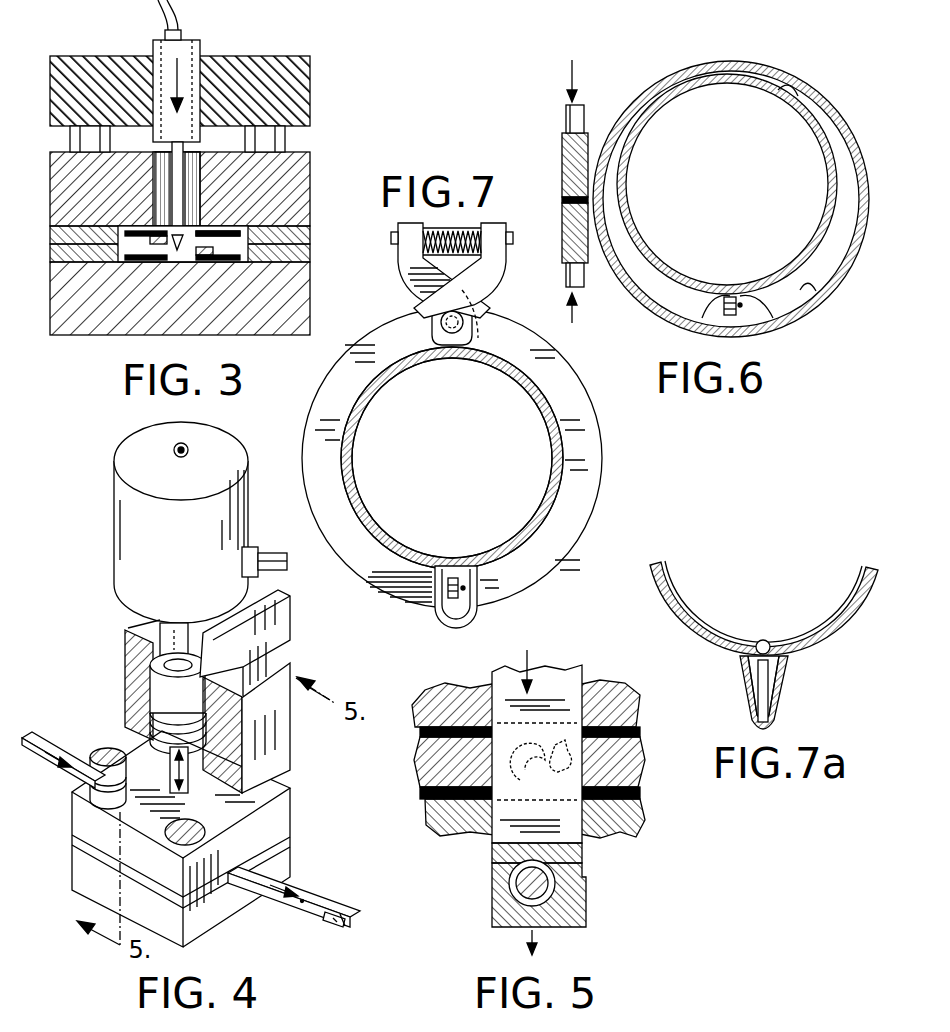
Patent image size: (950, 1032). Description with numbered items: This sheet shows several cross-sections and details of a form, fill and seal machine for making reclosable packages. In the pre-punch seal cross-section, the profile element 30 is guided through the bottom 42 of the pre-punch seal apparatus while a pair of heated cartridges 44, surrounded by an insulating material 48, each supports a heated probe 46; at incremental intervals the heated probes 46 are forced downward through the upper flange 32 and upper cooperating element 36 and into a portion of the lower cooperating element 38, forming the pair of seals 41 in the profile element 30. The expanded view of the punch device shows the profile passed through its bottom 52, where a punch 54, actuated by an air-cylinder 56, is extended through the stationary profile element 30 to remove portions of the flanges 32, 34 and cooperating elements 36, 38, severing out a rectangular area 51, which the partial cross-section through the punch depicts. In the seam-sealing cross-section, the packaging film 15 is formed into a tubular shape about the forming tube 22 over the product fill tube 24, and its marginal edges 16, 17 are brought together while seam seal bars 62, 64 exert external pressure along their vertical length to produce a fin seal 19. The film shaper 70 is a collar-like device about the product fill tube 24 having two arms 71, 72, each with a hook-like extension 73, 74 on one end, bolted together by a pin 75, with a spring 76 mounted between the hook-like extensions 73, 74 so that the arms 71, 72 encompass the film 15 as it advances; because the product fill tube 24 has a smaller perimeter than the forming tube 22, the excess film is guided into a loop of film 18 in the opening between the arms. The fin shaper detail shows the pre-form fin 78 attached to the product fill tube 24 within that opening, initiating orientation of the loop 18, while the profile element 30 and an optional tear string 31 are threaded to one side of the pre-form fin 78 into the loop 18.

In FIG. 6, the packaging film 15 is at (838, 122).
In FIG. 7, the packaging film 15 is at (530, 555).
In FIG. 7a, the packaging film 15 is at (712, 658).
In FIG. 6, the marginal edge 16 is at (560, 208).
In FIG. 6, the marginal edge 17 is at (562, 195).
In FIG. 7, the loop of film 18 is at (472, 630).
In FIG. 7a, the loop of film 18 is at (783, 706).
In FIG. 6, the fin seal 19 is at (562, 200).
In FIG. 6, the forming tube 22 is at (812, 300).
In FIG. 6, the product fill tube 24 is at (785, 93).
In FIG. 7, the product fill tube 24 is at (372, 530).
In FIG. 7a, the product fill tube 24 is at (698, 630).
In FIG. 6, the profile element 30 is at (700, 320).
In FIG. 7, the profile element 30 is at (436, 612).
In FIG. 4, the profile element 30 is at (48, 780).
In FIG. 7a, the profile element 30 is at (745, 676).
In FIG. 6, the tear string 31 is at (770, 322).
In FIG. 7, the tear string 31 is at (478, 600).
In FIG. 7a, the tear string 31 is at (775, 678).
In FIG. 3, the upper flange 32 is at (262, 237).
In FIG. 5, the upper flange 32 is at (437, 733).
In FIG. 3, the flange 34 is at (232, 264).
In FIG. 5, the flange 34 is at (437, 798).
In FIG. 3, the upper cooperating element 36 is at (193, 230).
In FIG. 5, the upper cooperating element 36 is at (585, 852).
In FIG. 3, the lower cooperating element 38 is at (140, 226).
In FIG. 5, the lower cooperating element 38 is at (573, 927).
In FIG. 4, the seals 41 is at (312, 914).
In FIG. 3, the bottom 42 is at (66, 302).
In FIG. 3, the heated cartridge 44 is at (200, 48).
In FIG. 3, the heated probe 46 is at (175, 172).
In FIG. 3, the insulating material 48 is at (75, 65).
In FIG. 4, the rectangular area 51 is at (318, 900).
In FIG. 4, the bottom 52 is at (72, 890).
In FIG. 4, the punch 54 is at (148, 752).
In FIG. 5, the punch 54 is at (563, 677).
In FIG. 4, the air-cylinder 56 is at (106, 492).
In FIG. 6, the seam seal bar 62 is at (583, 112).
In FIG. 6, the seam seal bar 64 is at (588, 268).
In FIG. 7, the film shaper 70 is at (481, 440).
In FIG. 7, the arm 71 is at (548, 500).
In FIG. 7, the arm 72 is at (330, 415).
In FIG. 7, the hook-like extension 73 is at (500, 255).
In FIG. 7, the hook-like extension 74 is at (404, 256).
In FIG. 7, the pin 75 is at (452, 335).
In FIG. 7, the spring 76 is at (470, 270).
In FIG. 7a, the pre-form fin 78 is at (772, 645).